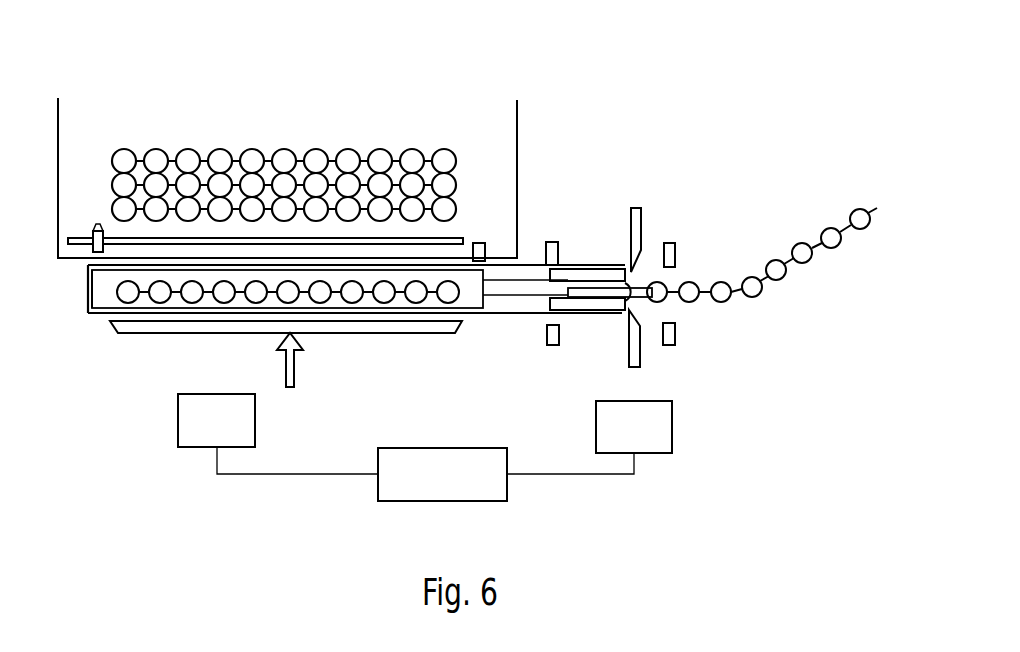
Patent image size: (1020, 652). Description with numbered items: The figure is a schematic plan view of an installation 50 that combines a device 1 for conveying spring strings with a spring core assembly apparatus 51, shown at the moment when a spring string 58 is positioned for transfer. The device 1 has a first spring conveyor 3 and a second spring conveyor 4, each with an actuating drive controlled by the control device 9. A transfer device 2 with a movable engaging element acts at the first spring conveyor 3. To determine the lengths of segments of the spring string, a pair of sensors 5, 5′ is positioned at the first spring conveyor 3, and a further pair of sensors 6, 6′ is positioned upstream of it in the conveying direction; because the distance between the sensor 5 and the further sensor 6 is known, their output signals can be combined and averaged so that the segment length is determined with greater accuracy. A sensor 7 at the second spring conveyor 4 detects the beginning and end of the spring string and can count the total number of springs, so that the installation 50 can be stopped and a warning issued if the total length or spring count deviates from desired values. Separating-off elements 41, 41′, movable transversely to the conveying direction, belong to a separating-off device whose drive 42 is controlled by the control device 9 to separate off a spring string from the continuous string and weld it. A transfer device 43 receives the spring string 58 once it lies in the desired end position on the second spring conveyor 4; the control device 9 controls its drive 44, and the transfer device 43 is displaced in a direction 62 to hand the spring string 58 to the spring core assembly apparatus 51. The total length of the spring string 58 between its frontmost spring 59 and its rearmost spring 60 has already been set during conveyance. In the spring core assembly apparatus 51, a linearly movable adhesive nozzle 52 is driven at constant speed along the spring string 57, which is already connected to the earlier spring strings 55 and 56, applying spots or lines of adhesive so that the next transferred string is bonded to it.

The installation 50 is at (629, 78).
The spring core assembly apparatus 51 is at (54, 90).
The adhesive nozzle 52 is at (93, 233).
The spring string 55 is at (453, 160).
The spring string 56 is at (452, 185).
The spring string 57 is at (452, 209).
The sensor 7 is at (484, 243).
The second spring conveyor 4 is at (80, 283).
The spring string 58 is at (102, 296).
The spring 59 is at (122, 297).
The rearmost spring 60 is at (455, 300).
The transfer device 43 is at (177, 332).
The direction 62 is at (290, 372).
The first spring conveyor 3 is at (532, 325).
The sensor 5′ is at (556, 243).
The sensor 5 is at (557, 344).
The separating-off element 41′ is at (640, 224).
The separating-off element 41 is at (637, 343).
The further sensor 6′ is at (676, 242).
The further sensor 6 is at (674, 343).
The transfer device 2 is at (674, 308).
The device for conveying spring strings 1 is at (651, 174).
The drive 44 is at (184, 446).
The drive 42 is at (672, 452).
The control device 9 is at (506, 500).